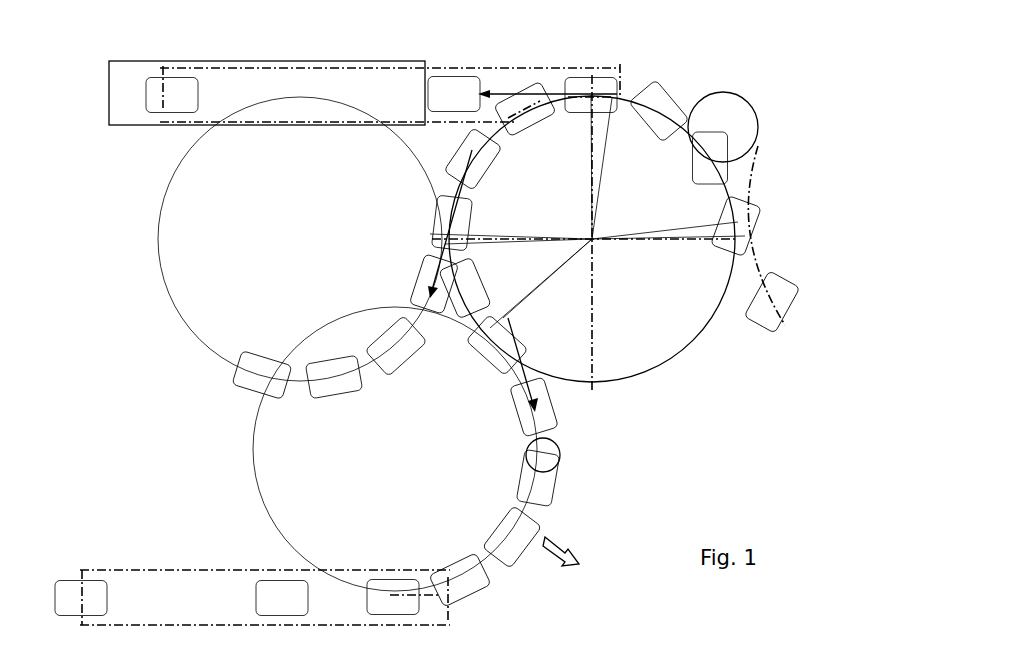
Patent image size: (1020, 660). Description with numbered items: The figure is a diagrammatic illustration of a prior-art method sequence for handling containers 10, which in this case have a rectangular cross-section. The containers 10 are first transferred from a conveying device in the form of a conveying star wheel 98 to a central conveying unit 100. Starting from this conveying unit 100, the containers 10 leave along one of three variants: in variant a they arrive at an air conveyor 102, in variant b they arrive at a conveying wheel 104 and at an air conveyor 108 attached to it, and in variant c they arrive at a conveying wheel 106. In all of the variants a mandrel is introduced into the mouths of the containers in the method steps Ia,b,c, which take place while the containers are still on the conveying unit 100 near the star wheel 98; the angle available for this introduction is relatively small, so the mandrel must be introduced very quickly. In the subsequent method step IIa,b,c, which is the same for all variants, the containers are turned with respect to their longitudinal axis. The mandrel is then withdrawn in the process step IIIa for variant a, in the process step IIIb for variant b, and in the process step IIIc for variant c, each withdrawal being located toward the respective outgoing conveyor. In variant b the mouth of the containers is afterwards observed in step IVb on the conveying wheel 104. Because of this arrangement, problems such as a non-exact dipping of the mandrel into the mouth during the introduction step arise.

The container 10 is at (778, 299).
The conveying star wheel 98 is at (752, 262).
The conveying unit 100 is at (638, 345).
The air conveyor 102 is at (242, 88).
The conveying wheel 104 is at (490, 498).
The conveying wheel 106 is at (262, 197).
The air conveyor 108 is at (223, 596).
The method steps of mandrel introduction Ia,b,c is at (746, 200).
The method step of container turning IIa,b,c is at (690, 90).
The process step of mandrel withdrawal (variant a) IIIa is at (602, 135).
The process step of mandrel withdrawal (variant b) IIIb is at (523, 318).
The process step of mandrel withdrawal (variant c) IIIc is at (450, 238).
The mouth observation step IVb is at (553, 450).